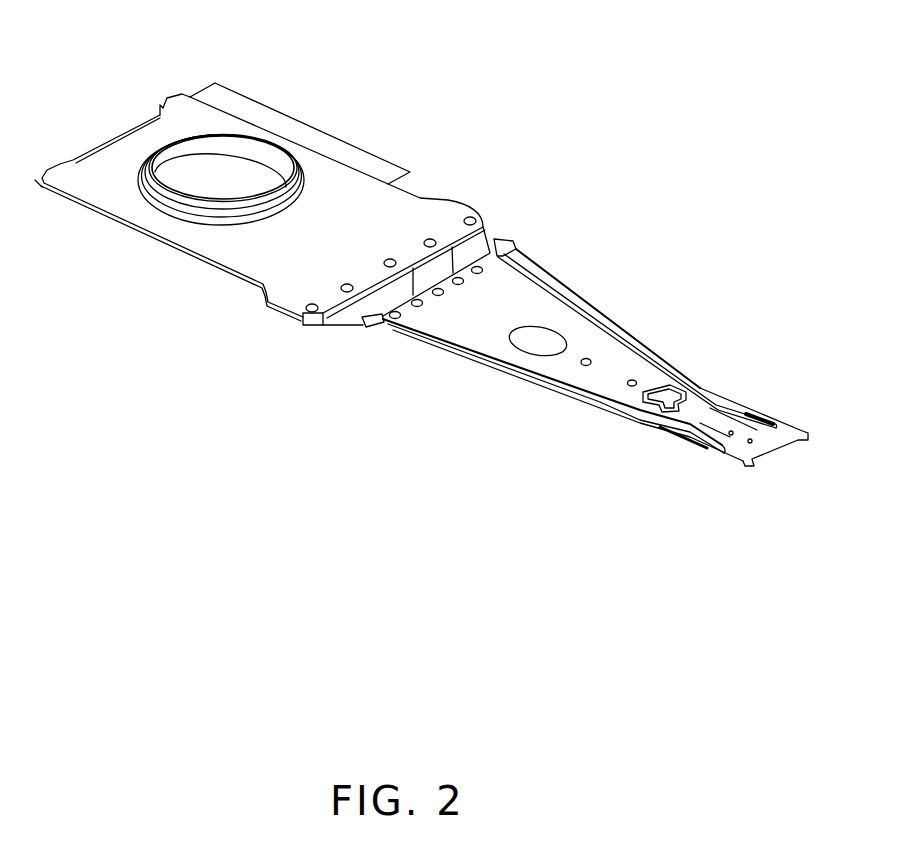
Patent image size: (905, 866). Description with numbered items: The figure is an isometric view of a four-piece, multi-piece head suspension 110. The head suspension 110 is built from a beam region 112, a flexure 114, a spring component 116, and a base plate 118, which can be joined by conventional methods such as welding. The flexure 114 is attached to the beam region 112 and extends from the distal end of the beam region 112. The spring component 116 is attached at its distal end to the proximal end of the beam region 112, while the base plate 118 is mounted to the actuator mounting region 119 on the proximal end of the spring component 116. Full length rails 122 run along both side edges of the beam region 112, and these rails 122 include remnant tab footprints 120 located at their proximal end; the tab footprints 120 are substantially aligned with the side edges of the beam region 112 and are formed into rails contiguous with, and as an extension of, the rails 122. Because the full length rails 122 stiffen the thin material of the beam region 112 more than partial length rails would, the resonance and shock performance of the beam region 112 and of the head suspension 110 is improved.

The head suspension 110 is at (697, 168).
The beam region 112 is at (607, 347).
The flexure 114 is at (758, 443).
The spring component 116 is at (496, 237).
The base plate 118 is at (368, 217).
The actuator mounting region 119 is at (263, 101).
The remnant tab footprints 120 is at (512, 253).
The full length rails 122 is at (570, 292).